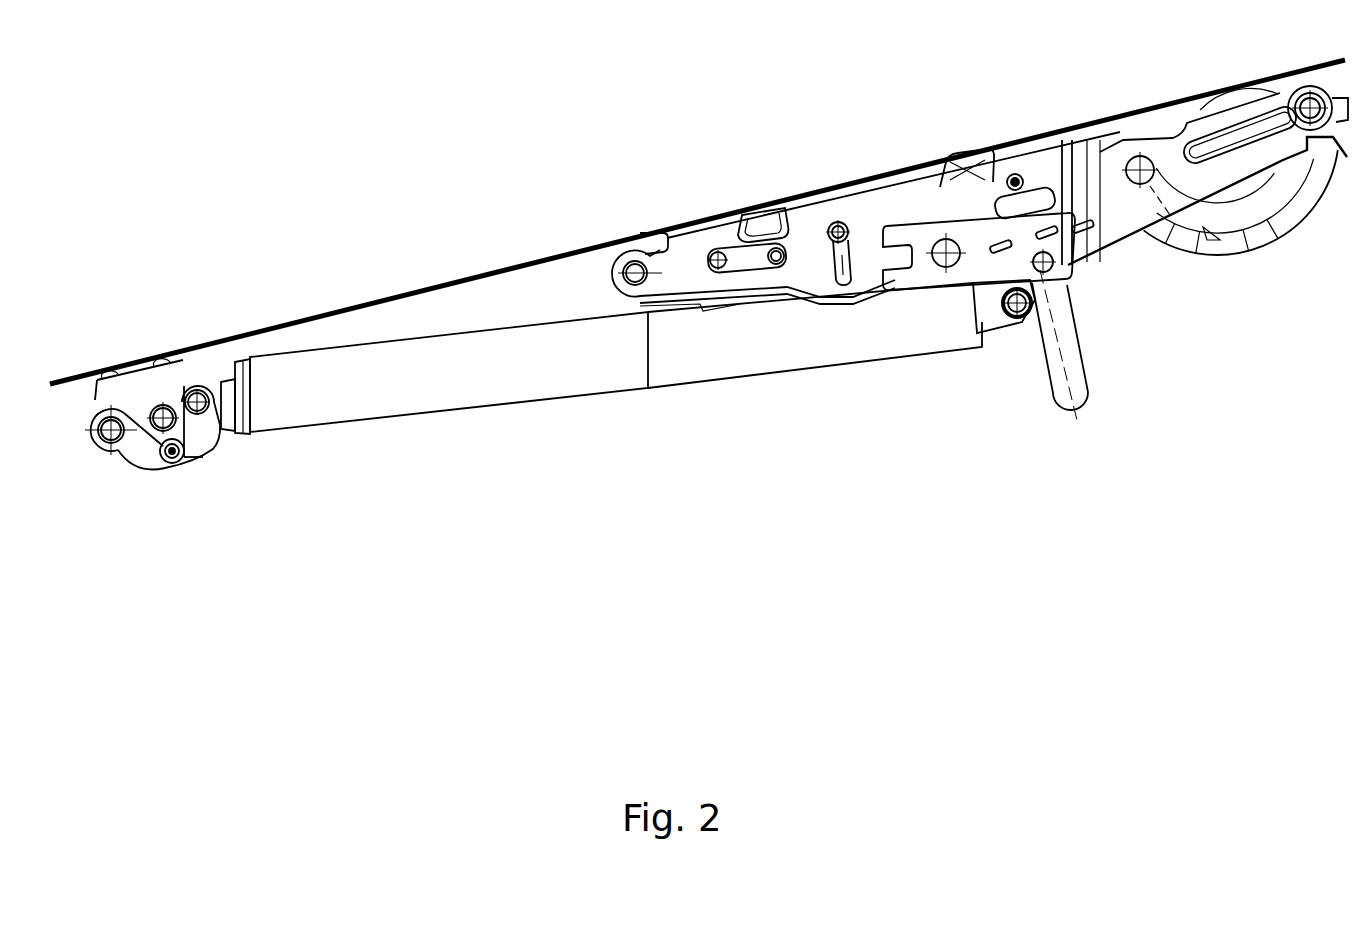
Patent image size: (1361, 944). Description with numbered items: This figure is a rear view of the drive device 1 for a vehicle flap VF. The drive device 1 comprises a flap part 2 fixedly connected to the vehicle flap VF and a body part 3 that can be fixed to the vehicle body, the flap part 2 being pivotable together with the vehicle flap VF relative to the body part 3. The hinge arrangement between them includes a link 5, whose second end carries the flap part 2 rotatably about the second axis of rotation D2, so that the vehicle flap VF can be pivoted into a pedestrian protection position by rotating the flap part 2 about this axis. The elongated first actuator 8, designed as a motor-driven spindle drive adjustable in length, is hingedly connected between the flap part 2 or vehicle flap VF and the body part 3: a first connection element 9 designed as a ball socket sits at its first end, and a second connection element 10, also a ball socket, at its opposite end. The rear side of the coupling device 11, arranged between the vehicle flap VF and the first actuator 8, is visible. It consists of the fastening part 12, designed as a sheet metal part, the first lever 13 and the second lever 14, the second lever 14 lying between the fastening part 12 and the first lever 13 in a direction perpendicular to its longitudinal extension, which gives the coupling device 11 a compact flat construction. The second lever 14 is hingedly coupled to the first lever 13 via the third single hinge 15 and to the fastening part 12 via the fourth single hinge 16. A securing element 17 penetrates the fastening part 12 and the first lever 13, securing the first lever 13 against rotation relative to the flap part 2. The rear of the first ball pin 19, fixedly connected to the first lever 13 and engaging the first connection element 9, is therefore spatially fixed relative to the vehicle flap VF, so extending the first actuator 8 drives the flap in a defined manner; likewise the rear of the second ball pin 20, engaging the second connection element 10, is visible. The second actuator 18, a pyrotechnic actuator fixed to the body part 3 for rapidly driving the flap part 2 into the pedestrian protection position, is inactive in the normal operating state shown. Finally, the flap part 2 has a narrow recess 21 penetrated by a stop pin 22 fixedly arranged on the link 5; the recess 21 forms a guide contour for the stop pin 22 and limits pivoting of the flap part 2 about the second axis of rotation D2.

The drive device 1 is at (695, 480).
The flap part 2 is at (858, 215).
The body part 3 is at (1135, 223).
The link 5 is at (1253, 230).
The first actuator 8 is at (613, 368).
The first connection element 9 is at (203, 383).
The second connection element 10 is at (983, 337).
The coupling device 11 is at (261, 456).
The fastening part 12 is at (137, 387).
The first lever 13 is at (198, 447).
The second lever 14 is at (133, 438).
The third single hinge 15 is at (105, 437).
The fourth single hinge 16 is at (163, 405).
The securing element 17 is at (172, 458).
The second actuator 18 is at (1077, 370).
The first ball pin 19 is at (198, 398).
The second ball pin 20 is at (1022, 322).
The recess 21 is at (841, 265).
The stop pin 22 is at (830, 226).
The second axis of rotation D2 is at (650, 398).
The vehicle flap VF is at (440, 285).